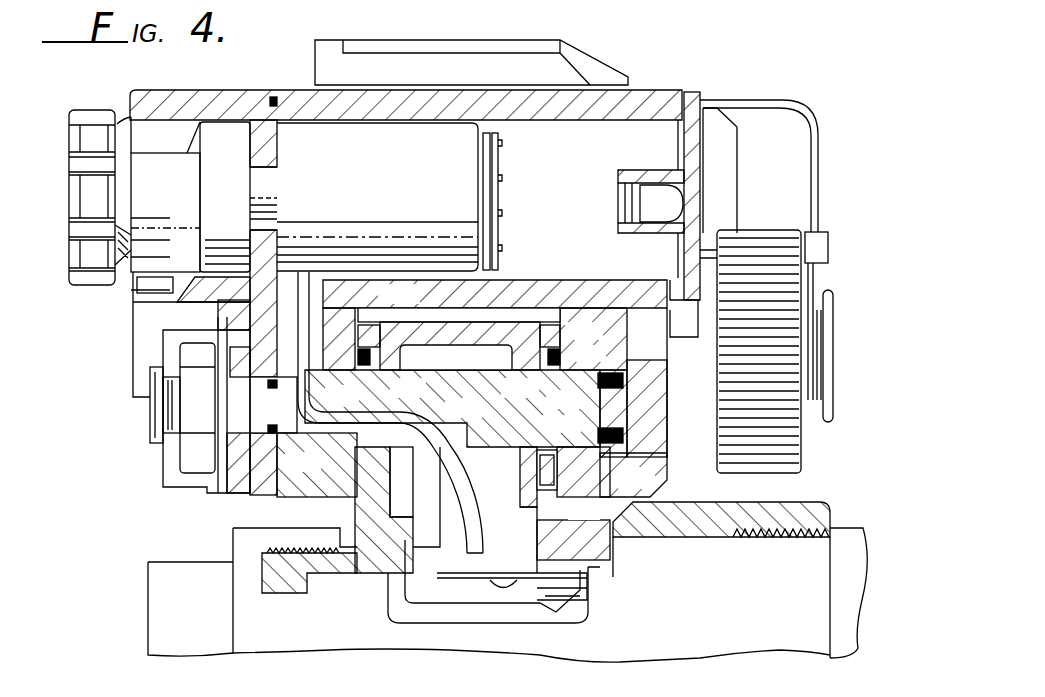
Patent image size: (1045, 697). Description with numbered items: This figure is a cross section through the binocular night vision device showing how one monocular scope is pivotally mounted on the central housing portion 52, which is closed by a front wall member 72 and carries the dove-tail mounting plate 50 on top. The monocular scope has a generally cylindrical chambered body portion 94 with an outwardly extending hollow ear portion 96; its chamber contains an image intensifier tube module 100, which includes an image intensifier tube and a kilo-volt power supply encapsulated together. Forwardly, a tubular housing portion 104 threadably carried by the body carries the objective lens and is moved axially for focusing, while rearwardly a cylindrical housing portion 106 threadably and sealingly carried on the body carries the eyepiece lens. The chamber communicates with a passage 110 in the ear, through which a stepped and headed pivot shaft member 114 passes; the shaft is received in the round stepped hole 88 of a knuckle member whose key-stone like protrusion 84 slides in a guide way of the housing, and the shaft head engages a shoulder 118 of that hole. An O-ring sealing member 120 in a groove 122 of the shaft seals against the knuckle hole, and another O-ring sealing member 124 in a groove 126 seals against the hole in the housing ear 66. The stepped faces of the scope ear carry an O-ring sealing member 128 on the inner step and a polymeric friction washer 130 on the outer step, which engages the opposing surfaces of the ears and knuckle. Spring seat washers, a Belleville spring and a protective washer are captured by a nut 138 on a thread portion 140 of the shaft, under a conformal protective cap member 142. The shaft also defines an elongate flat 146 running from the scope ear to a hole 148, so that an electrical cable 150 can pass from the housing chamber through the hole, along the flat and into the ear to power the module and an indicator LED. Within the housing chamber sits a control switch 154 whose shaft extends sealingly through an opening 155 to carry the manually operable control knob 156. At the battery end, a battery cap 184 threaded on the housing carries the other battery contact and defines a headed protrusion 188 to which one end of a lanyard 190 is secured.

The dove-tail mounting plate 50 is at (622, 62).
The central housing portion 52 is at (666, 94).
The ear 66 is at (240, 495).
The front wall member 72 is at (226, 95).
The key-stone like protrusion 84 is at (666, 357).
The round stepped hole 88 is at (568, 352).
The chambered body portion 94 is at (322, 584).
The hollow ear portion 96 is at (548, 510).
The image intensifier tube module 100 is at (332, 640).
The tubular housing portion 104 is at (160, 562).
The cylindrical housing portion 106 is at (832, 518).
The passage 110 is at (355, 514).
The pivot shaft member 114 is at (667, 418).
The shoulder 118 is at (619, 473).
The O-ring sealing member 120 is at (598, 386).
The groove 122 is at (598, 428).
The O-ring sealing member 124 is at (242, 384).
The groove 126 is at (277, 460).
The O-ring sealing member 128 is at (378, 372).
The polymeric friction washer 130 is at (370, 325).
The nut 138 is at (163, 462).
The thread portion 140 is at (148, 410).
The conformal protective cap member 142 is at (160, 433).
The elongate flat 146 is at (438, 425).
The hole 148 is at (312, 398).
The electrical cable 150 is at (486, 538).
The control switch 154 is at (400, 187).
The opening 155 is at (280, 214).
The control knob 156 is at (96, 108).
The battery cap 184 is at (756, 230).
The headed protrusion 188 is at (834, 325).
The lanyard 190 is at (803, 100).